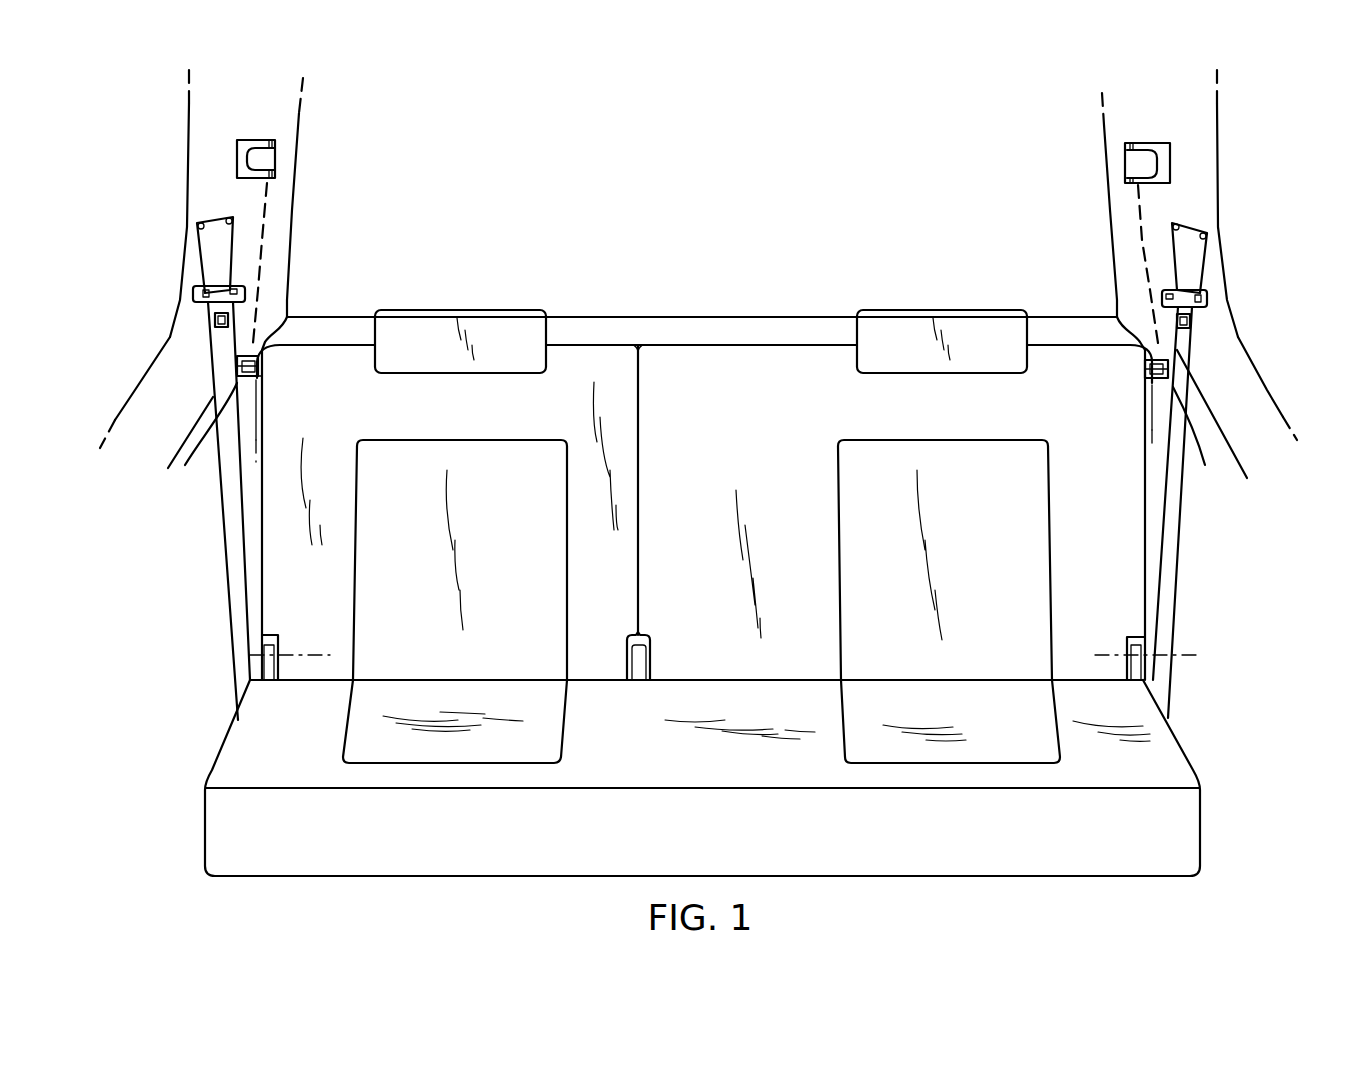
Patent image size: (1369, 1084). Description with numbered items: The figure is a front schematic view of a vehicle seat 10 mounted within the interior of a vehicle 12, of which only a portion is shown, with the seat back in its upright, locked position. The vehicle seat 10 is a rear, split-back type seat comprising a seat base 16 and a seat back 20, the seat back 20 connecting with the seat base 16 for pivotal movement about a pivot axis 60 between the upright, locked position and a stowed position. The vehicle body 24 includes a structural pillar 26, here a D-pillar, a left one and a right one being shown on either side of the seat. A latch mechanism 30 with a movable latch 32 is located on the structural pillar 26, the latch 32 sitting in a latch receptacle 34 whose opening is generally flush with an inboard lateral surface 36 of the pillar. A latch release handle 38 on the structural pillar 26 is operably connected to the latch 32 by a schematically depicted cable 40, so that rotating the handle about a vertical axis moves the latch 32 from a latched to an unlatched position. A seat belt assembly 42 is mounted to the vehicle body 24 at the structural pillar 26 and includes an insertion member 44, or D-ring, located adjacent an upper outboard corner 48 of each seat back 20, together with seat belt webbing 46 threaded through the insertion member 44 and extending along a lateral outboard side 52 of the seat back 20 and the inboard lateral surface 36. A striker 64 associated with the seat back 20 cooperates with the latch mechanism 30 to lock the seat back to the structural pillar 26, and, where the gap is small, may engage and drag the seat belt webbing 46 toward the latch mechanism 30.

The vehicle seat 10 is at (645, 275).
The vehicle 12 is at (1250, 195).
The seat base 16 is at (792, 775).
The seat back 20 is at (672, 360).
The vehicle body 24 is at (1255, 352).
The structural pillar 26 is at (202, 133).
The latch mechanism 30 is at (296, 298).
The latch 32 is at (258, 380).
The latch receptacle 34 is at (707, 425).
The inboard lateral surface 36 is at (257, 415).
The latch release handle 38 is at (258, 160).
The cable 40 is at (268, 216).
The seat belt assembly 42 is at (195, 317).
The insertion member 44 is at (197, 228).
The seat belt webbing 46 is at (232, 542).
The upper outboard corner 48 is at (282, 353).
The lateral outboard side 52 is at (260, 508).
The pivot axis 60 is at (310, 658).
The striker 64 is at (272, 370).